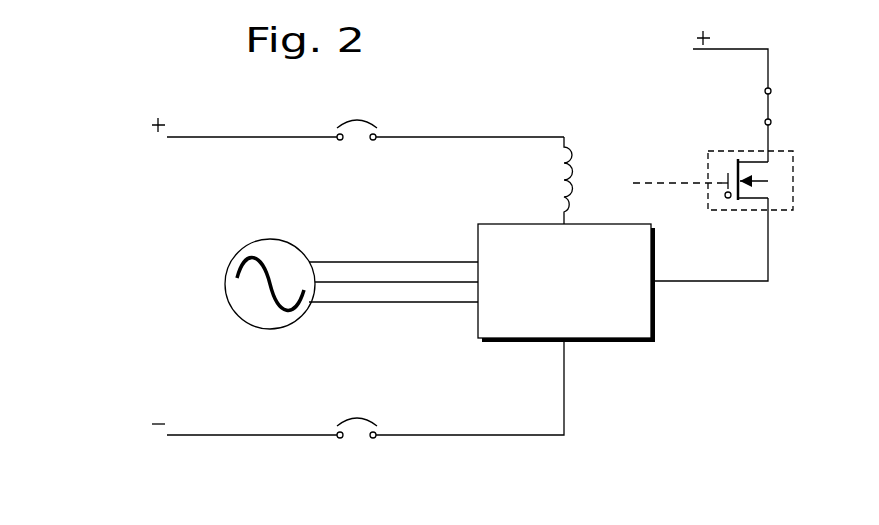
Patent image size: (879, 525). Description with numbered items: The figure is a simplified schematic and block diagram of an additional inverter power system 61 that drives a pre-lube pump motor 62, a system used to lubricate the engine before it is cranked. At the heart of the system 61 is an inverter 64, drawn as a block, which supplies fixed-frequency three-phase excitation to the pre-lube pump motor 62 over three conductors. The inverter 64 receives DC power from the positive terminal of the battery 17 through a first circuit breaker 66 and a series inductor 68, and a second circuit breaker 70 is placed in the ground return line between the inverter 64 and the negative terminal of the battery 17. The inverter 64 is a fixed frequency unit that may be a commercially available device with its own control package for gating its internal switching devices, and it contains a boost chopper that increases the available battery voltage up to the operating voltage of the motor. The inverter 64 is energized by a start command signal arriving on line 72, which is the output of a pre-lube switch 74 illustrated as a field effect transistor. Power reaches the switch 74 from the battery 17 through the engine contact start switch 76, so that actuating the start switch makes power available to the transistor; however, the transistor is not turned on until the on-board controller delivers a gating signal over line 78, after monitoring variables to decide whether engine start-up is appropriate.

The battery 17 is at (370, 241).
The inverter power system 61 is at (728, 375).
The pre-lube pump motor 62 is at (272, 239).
The inverter 64 is at (655, 246).
The first circuit breaker 66 is at (360, 140).
The series inductor 68 is at (575, 175).
The second circuit breaker 70 is at (360, 441).
The line 72 is at (728, 282).
The pre-lube switch 74 is at (793, 165).
The engine contact start switch 76 is at (765, 107).
The line 78 is at (640, 183).